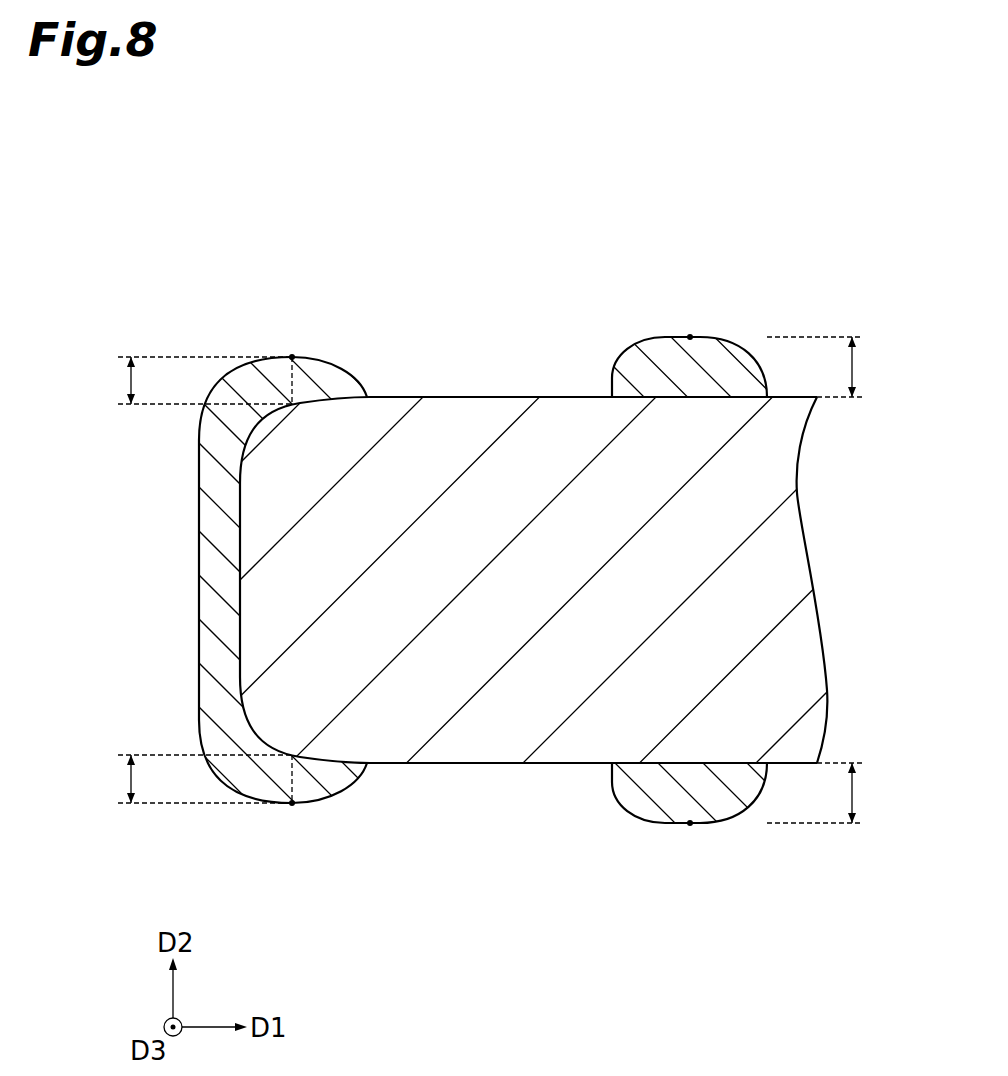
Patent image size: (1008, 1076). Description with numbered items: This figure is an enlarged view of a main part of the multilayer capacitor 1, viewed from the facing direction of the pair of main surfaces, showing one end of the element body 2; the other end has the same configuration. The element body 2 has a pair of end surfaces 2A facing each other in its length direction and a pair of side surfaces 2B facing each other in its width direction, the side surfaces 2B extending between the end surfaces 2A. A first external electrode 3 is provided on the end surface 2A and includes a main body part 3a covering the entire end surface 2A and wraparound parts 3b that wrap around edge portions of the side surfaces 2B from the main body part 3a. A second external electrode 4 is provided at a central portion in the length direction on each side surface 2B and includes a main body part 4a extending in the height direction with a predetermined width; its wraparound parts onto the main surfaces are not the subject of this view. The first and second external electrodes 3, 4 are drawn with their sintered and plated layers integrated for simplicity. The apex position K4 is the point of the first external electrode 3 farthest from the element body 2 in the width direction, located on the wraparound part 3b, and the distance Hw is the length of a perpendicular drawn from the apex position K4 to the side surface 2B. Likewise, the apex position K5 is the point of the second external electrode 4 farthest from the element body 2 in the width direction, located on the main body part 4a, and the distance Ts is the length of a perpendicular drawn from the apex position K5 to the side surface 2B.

The multilayer capacitor 1 is at (188, 248).
The element body 2 is at (504, 568).
The end surface 2A is at (240, 593).
The side surface 2B is at (500, 397).
The first external electrode 3 is at (393, 582).
The main body part 3a is at (212, 652).
The wraparound part 3b is at (330, 372).
The second external electrode 4 is at (695, 582).
The main body part 4a is at (655, 347).
The apex position K4 is at (292, 357).
The apex position K5 is at (690, 337).
The distance Hw is at (184, 580).
The distance Ts is at (830, 580).